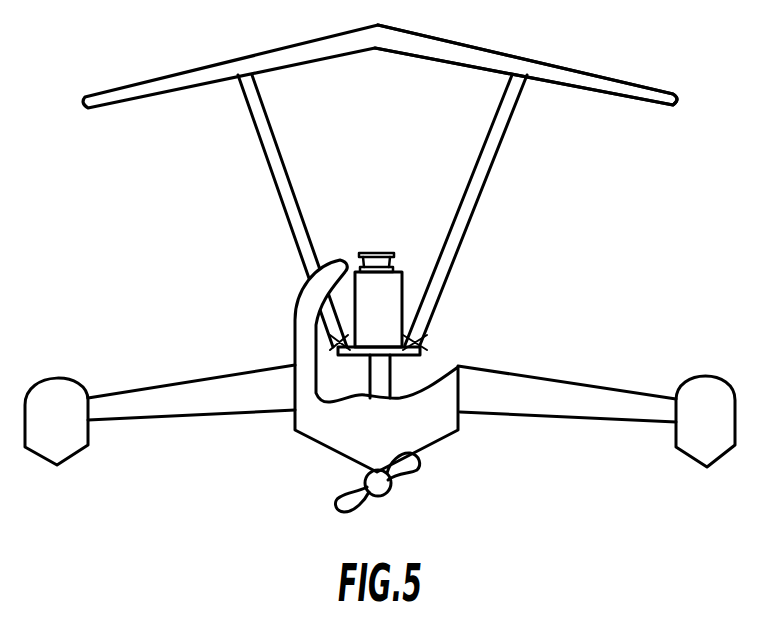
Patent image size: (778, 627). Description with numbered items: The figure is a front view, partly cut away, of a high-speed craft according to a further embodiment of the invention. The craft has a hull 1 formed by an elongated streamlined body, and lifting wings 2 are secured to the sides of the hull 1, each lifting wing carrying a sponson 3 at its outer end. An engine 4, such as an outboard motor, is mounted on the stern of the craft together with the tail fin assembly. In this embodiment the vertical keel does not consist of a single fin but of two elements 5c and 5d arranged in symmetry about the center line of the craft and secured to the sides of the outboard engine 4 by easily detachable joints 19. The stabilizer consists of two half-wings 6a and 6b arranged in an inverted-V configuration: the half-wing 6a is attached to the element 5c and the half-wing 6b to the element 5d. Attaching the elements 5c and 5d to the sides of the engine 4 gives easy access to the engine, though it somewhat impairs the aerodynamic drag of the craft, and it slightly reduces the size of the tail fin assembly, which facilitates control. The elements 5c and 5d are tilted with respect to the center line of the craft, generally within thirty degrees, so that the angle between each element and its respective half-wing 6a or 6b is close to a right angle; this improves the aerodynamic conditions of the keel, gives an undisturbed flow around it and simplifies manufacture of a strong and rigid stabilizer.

The hull 1 is at (442, 418).
The lifting wings 2 is at (267, 390).
The sponsons 3 is at (73, 427).
The engine 4 is at (388, 303).
The keel element 5c is at (273, 157).
The keel element 5d is at (490, 147).
The half-wing 6a is at (150, 88).
The half-wing 6b is at (607, 87).
The easily detachable joints 19 is at (430, 341).